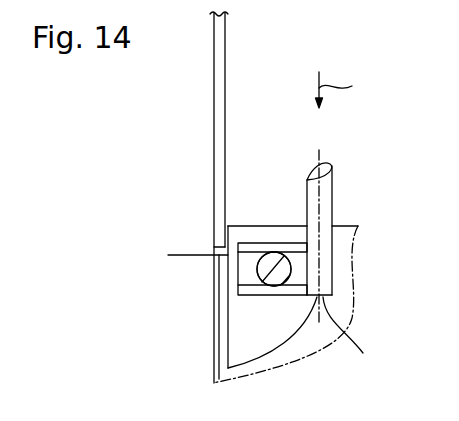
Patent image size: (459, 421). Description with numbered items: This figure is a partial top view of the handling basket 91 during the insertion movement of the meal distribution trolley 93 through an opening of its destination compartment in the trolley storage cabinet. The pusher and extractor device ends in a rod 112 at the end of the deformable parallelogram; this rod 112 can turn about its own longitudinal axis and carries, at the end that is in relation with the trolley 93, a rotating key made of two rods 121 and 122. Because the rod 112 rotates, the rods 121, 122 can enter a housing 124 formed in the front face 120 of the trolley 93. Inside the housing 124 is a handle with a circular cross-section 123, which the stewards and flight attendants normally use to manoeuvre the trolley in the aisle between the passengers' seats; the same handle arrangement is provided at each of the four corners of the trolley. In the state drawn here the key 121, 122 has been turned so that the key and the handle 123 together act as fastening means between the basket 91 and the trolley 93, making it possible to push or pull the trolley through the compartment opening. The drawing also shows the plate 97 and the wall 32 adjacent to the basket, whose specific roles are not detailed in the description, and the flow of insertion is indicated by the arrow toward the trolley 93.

The basket 91 is at (378, 49).
The plate 97 is at (213, 92).
The housing wall 32 is at (214, 347).
The rod 121 is at (264, 244).
The rod 122 is at (274, 296).
The handle with a circular cross-section 123 is at (256, 268).
The front face 120 is at (343, 225).
The meal distribution trolley 93 is at (333, 300).
The rod 112 is at (358, 339).
The housing 124 is at (280, 345).